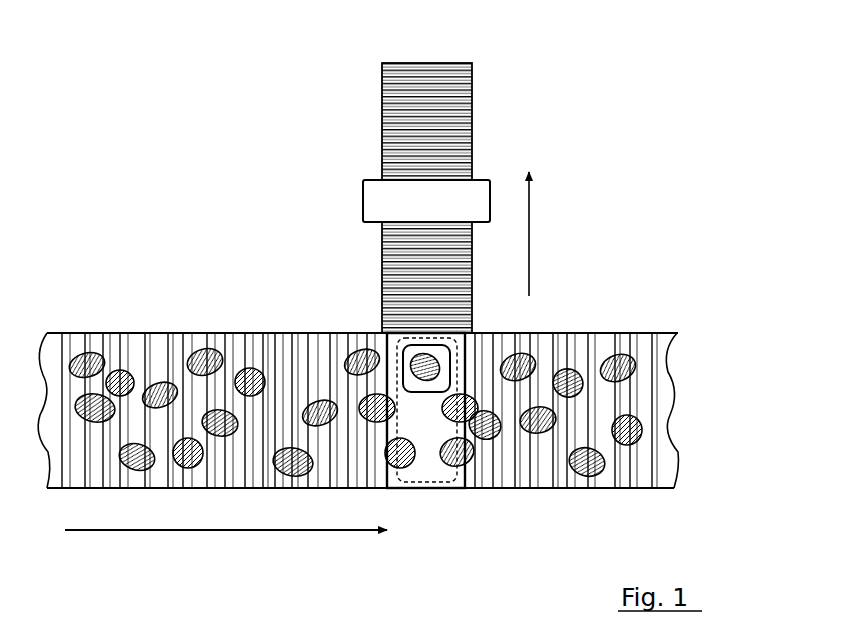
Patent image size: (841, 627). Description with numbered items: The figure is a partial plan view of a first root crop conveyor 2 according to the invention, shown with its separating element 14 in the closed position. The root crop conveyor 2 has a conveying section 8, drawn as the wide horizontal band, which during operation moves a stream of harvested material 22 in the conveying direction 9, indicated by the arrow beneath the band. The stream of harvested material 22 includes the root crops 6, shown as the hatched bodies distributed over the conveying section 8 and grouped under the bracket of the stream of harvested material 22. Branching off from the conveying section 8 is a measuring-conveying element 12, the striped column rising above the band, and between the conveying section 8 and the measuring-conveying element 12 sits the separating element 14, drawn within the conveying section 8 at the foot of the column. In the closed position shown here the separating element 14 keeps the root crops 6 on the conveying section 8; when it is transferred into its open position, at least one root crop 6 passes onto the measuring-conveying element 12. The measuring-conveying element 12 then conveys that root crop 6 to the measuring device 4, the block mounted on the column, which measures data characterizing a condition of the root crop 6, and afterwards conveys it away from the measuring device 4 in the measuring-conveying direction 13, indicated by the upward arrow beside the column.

The root crop conveyor 2 is at (697, 88).
The measuring device 4 is at (433, 215).
The root crops 6 is at (100, 350).
The conveying section 8 is at (703, 333).
The conveying direction 9 is at (226, 549).
The measuring-conveying element 12 is at (470, 53).
The measuring-conveying direction 13 is at (548, 234).
The separating element 14 is at (427, 489).
The stream of harvested material 22 is at (232, 233).